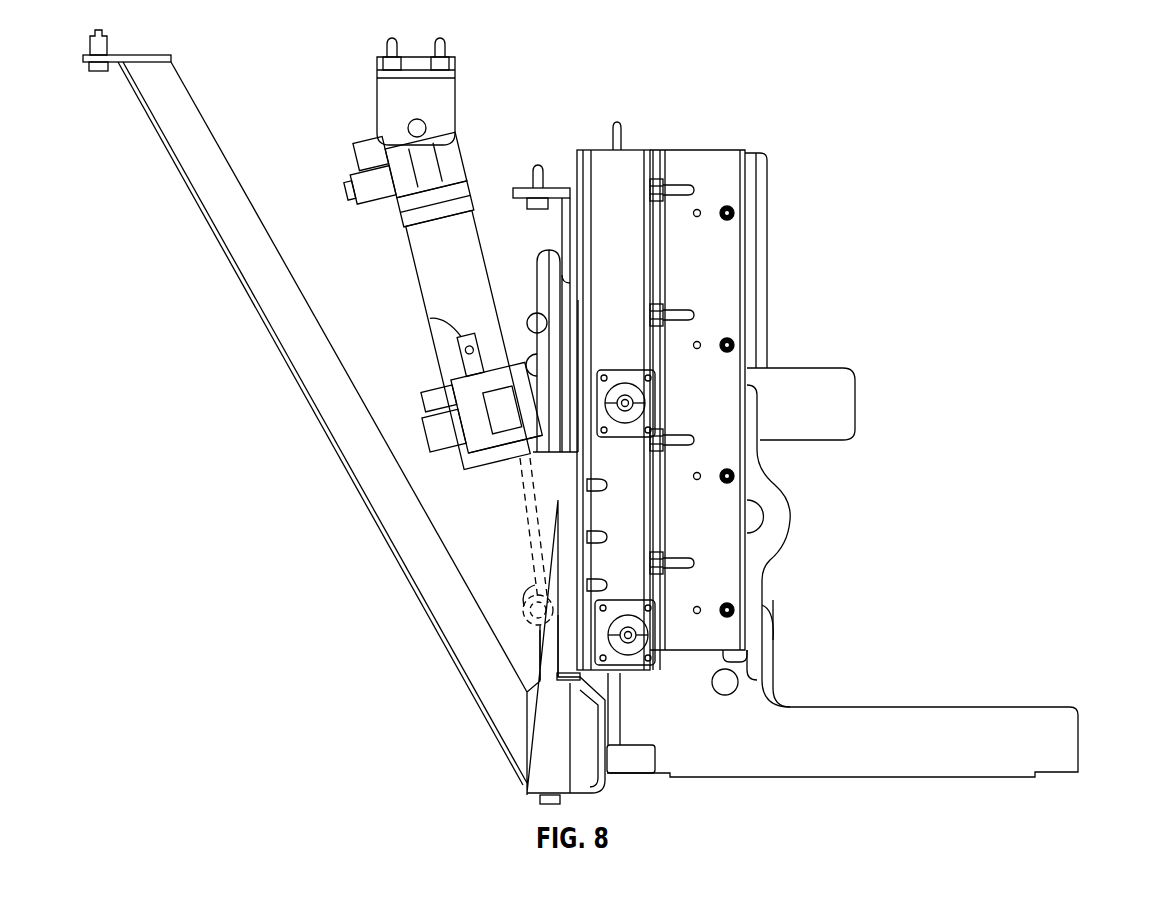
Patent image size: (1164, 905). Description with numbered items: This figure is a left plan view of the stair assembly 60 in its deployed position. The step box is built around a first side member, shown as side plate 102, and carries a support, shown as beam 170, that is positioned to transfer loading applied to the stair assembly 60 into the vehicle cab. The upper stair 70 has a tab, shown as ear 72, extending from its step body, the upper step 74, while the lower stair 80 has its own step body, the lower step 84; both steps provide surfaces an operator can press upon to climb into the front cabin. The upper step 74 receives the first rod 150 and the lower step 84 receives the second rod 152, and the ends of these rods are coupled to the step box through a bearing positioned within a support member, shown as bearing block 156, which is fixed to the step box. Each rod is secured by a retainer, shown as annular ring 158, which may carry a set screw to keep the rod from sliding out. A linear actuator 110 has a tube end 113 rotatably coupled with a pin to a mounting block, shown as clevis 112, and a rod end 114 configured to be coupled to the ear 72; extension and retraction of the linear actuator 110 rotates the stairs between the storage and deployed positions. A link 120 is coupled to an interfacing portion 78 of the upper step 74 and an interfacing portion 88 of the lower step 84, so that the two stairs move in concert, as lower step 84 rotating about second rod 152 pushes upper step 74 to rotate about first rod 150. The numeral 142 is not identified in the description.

The stair assembly 60 is at (877, 73).
The upper stair 70 is at (896, 377).
The ear 72 is at (527, 322).
The upper step 74 is at (827, 378).
The interfacing portion 78 is at (762, 383).
The lower stair 80 is at (1088, 731).
The lower step 84 is at (1030, 718).
The interfacing portion 88 is at (763, 637).
The side plate 102 is at (646, 264).
The linear actuator 110 is at (420, 250).
The clevis 112 is at (440, 105).
The tube end 113 is at (452, 160).
The rod end 114 is at (520, 612).
The link 120 is at (773, 542).
The slide bracket 142 is at (540, 378).
The first rod 150 is at (633, 406).
The second rod 152 is at (628, 642).
The bearing block 156 is at (600, 417).
The annular ring 158 is at (630, 388).
The beam 170 is at (203, 173).